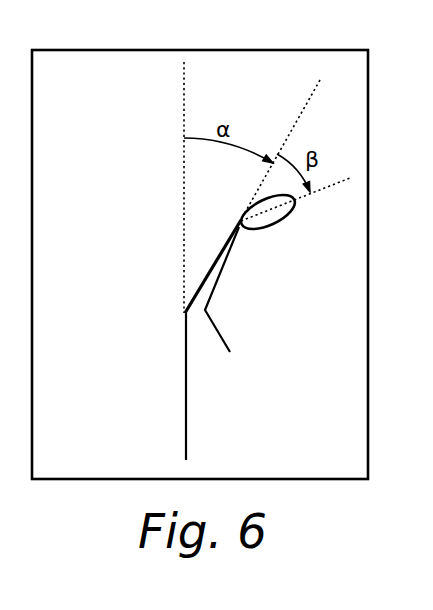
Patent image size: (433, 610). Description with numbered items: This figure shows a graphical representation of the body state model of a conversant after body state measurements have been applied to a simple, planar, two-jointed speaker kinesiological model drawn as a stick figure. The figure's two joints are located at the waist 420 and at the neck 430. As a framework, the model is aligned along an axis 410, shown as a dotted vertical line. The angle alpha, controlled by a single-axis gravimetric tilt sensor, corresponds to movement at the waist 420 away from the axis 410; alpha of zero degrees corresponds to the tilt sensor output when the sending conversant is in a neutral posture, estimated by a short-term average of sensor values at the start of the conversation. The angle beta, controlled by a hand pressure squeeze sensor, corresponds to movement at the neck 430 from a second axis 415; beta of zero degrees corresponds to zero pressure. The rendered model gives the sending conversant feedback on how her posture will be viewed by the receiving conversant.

The axis 410 is at (184, 98).
The axis 415 is at (299, 122).
The waist 420 is at (185, 313).
The neck 430 is at (240, 221).